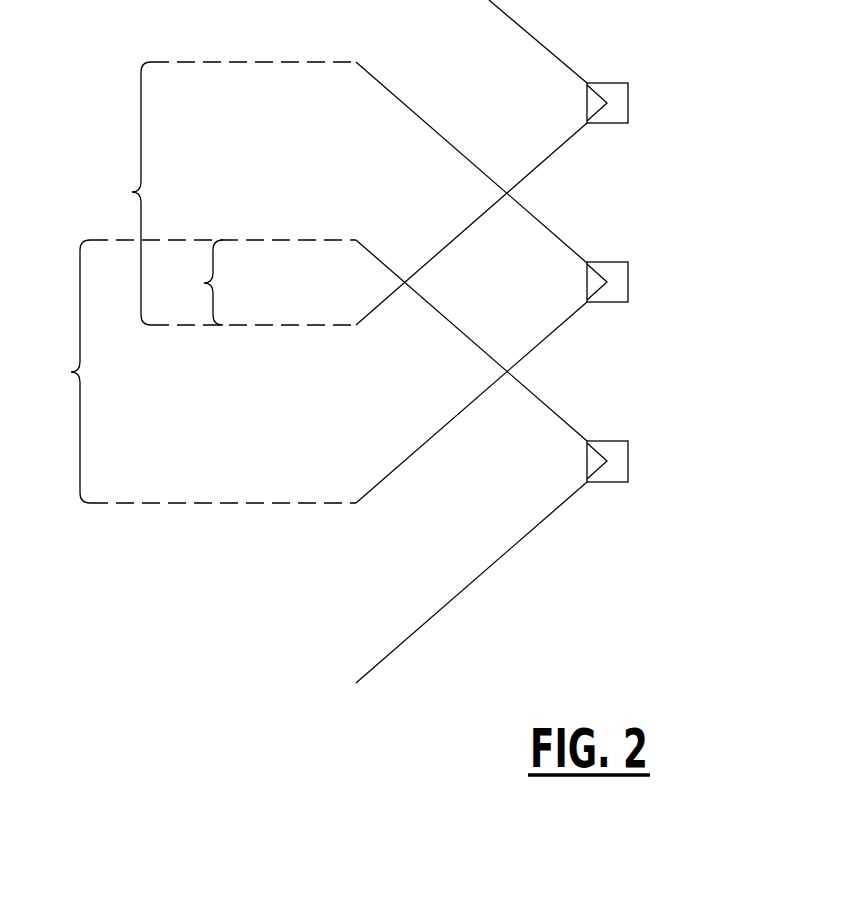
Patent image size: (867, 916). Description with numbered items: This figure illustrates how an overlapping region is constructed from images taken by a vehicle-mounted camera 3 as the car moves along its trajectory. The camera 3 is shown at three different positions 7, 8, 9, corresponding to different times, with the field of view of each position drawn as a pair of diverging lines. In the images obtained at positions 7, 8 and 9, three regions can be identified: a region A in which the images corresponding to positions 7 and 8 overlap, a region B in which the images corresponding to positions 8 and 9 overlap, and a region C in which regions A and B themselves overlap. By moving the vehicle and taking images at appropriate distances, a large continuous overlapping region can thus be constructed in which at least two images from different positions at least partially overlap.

The vehicle-mounted camera 3 is at (628, 93).
The first camera position 7 is at (628, 118).
The second camera position 8 is at (628, 297).
The third camera position 9 is at (628, 475).
The first overlapping region A is at (232, 193).
The second overlapping region B is at (201, 371).
The common overlapping region C is at (202, 282).